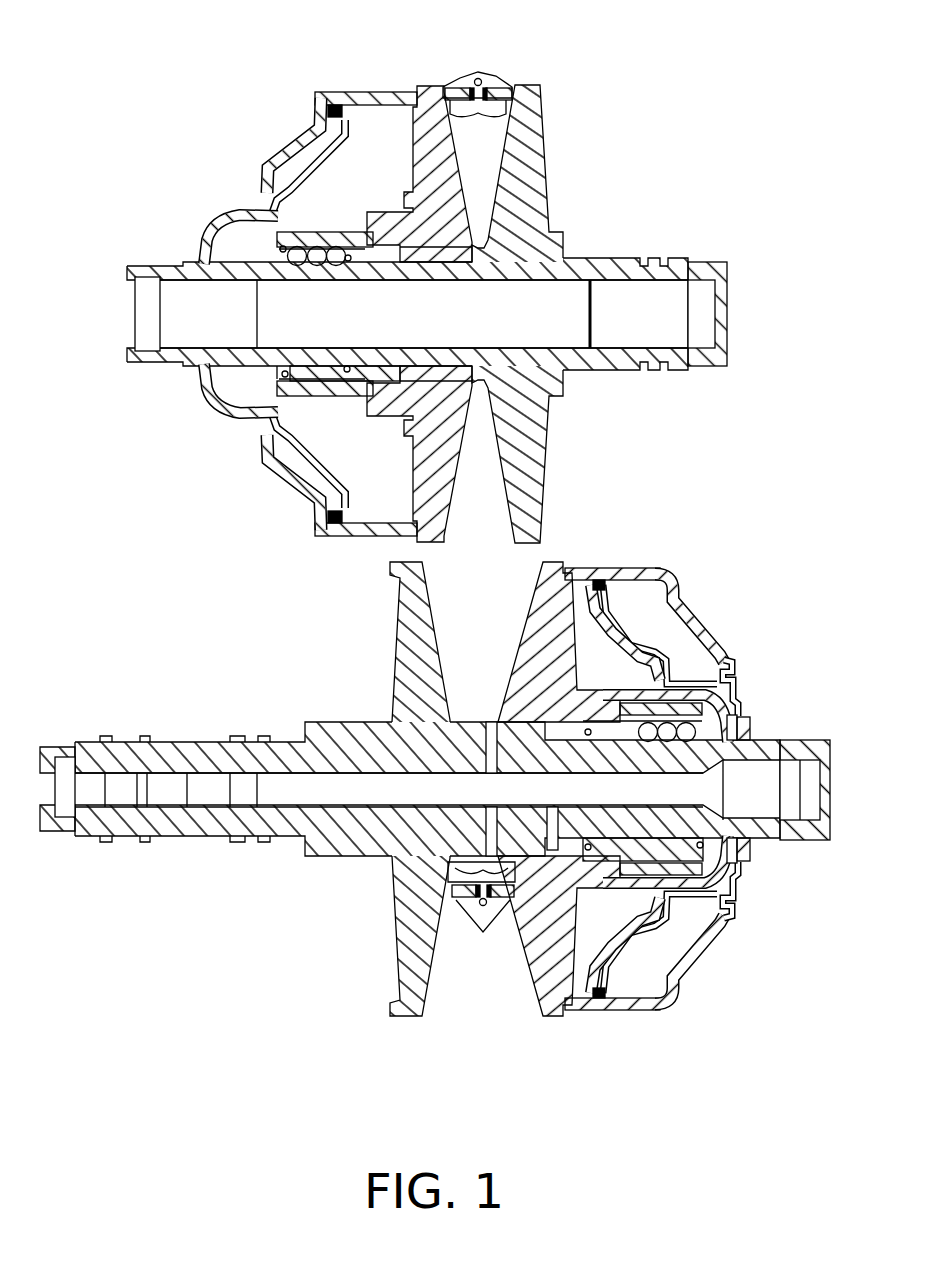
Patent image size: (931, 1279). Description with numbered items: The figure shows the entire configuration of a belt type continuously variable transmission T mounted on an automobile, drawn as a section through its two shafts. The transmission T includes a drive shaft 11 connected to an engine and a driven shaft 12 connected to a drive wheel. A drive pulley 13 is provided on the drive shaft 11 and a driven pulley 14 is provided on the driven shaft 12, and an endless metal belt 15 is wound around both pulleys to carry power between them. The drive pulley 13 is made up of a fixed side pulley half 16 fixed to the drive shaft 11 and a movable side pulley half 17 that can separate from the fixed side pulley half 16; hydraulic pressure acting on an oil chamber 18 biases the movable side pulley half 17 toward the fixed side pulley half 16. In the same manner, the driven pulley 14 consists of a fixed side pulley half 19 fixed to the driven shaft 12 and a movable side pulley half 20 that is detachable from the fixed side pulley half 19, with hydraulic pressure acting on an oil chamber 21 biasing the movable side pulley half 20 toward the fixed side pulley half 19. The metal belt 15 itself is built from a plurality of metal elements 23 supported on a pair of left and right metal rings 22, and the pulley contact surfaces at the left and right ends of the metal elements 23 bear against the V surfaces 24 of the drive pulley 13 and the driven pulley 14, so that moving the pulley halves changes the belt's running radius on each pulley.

The belt type continuously variable transmission T is at (229, 138).
The drive shaft 11 is at (632, 252).
The driven shaft 12 is at (345, 735).
The drive pulley 13 is at (645, 105).
The driven pulley 14 is at (533, 573).
The endless metal belt 15 is at (493, 76).
The fixed side pulley half 16 is at (538, 208).
The movable side pulley half 17 is at (452, 142).
The oil chamber 18 is at (375, 190).
The fixed side pulley half 19 is at (422, 638).
The movable side pulley half 20 is at (538, 633).
The oil chamber 21 is at (624, 686).
The metal rings 22 is at (484, 922).
The metal elements 23 is at (466, 80).
The V surfaces 24 is at (500, 118).